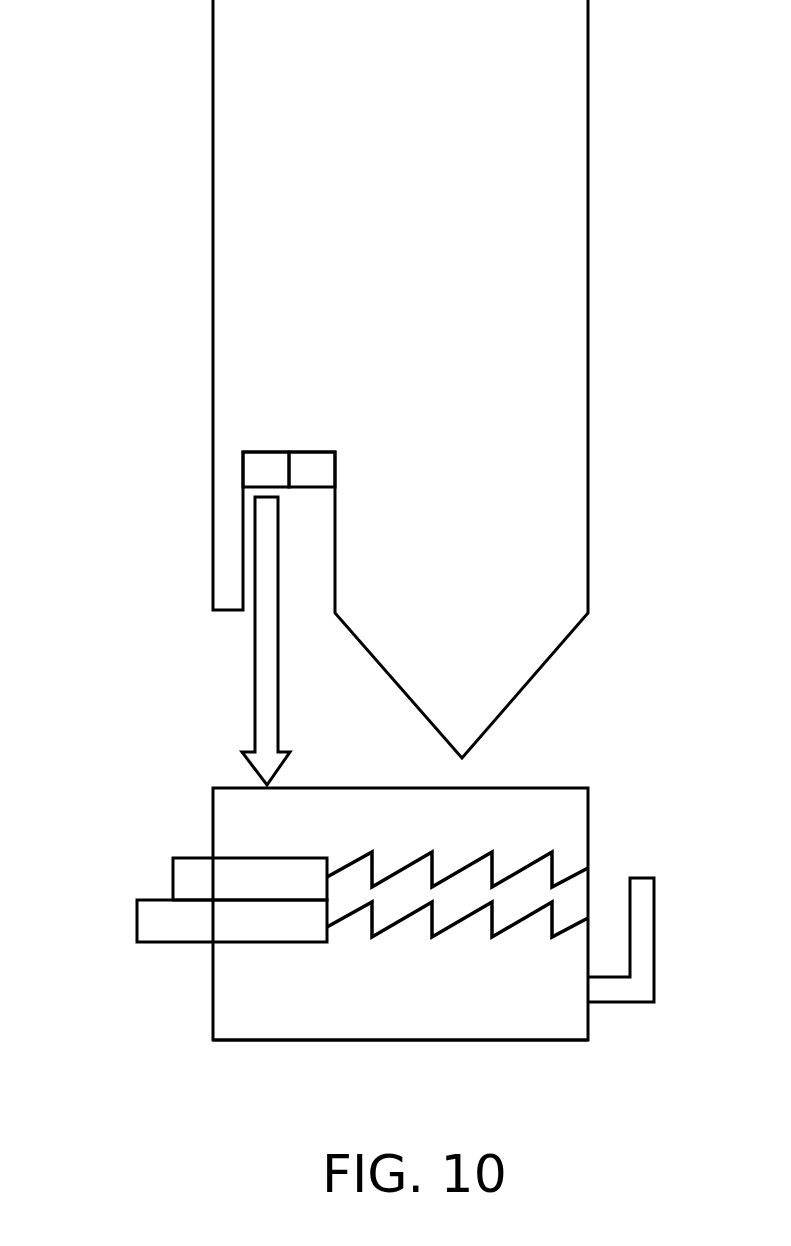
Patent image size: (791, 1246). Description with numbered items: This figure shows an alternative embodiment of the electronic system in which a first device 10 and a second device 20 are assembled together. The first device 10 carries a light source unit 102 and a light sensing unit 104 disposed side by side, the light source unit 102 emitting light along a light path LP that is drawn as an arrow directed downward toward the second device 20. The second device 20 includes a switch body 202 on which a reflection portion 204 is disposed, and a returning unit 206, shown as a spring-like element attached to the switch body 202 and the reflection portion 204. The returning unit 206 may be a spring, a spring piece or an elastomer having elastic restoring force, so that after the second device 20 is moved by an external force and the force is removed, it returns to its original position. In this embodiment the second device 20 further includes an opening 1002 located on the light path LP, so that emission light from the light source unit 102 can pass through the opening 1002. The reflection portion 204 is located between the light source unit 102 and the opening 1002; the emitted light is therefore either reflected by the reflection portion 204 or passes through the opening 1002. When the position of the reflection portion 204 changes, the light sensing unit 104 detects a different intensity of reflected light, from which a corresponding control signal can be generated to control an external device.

The first device 10 is at (588, 92).
The light source unit 102 is at (263, 450).
The light sensing unit 104 is at (318, 450).
The light path LP is at (260, 661).
The second device 20 is at (213, 812).
The switch body 202 is at (147, 925).
The reflection portion 204 is at (183, 873).
The returning unit 206 is at (552, 850).
The opening 1002 is at (513, 1040).